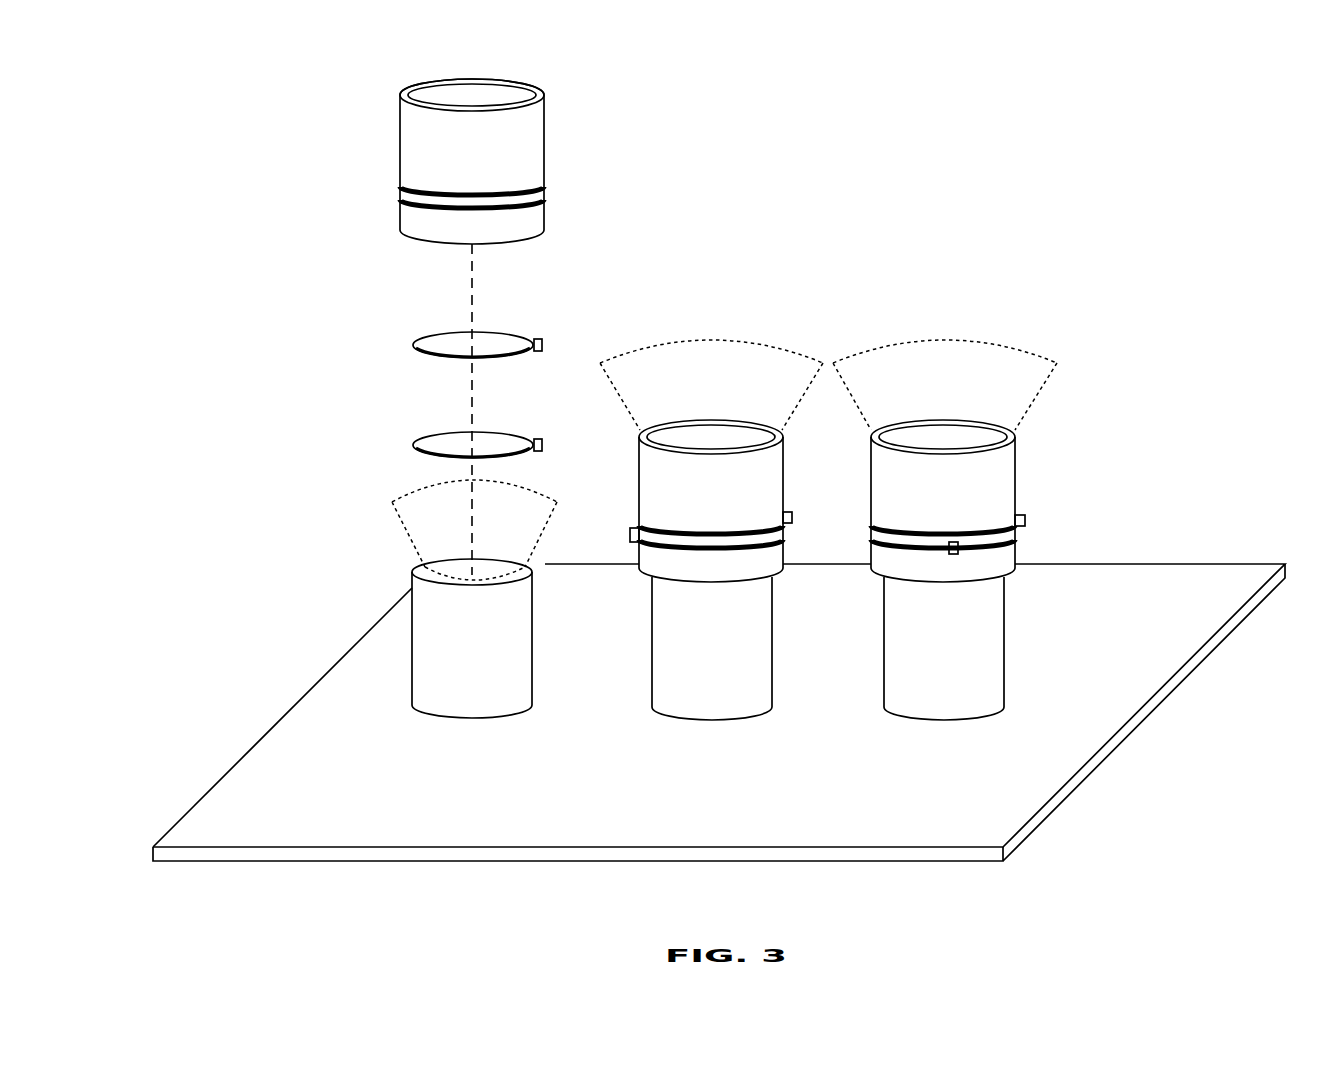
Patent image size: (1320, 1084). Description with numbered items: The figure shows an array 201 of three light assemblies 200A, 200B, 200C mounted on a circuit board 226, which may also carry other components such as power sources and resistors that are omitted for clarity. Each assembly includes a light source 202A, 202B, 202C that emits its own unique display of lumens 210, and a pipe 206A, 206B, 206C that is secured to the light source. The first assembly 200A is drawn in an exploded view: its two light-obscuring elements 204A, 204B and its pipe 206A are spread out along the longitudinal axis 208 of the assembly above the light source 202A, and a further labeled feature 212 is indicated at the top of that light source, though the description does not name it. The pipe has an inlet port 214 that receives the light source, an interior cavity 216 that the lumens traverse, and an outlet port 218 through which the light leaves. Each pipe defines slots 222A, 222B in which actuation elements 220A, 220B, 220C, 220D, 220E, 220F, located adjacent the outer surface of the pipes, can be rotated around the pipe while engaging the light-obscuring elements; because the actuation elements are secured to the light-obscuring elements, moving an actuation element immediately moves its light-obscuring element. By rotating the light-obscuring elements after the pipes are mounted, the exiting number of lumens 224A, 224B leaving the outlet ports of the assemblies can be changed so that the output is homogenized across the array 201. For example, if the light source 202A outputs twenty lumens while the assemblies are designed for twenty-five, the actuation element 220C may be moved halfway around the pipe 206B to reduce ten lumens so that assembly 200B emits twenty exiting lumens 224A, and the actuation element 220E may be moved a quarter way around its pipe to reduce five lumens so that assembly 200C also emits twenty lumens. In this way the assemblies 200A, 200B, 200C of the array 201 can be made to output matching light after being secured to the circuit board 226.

The array 201 is at (1207, 85).
The first assembly 200A is at (423, 667).
The assembly 200B is at (704, 536).
The assembly 200C is at (934, 536).
The light source 202A is at (418, 590).
The light source 202B is at (668, 640).
The light source 202C is at (898, 645).
The light-obscuring element 204A is at (422, 446).
The light-obscuring element 204B is at (420, 346).
The pipe 206A is at (408, 139).
The pipe 206B is at (658, 488).
The pipe 206C is at (890, 488).
The longitudinal axis 208 is at (472, 392).
The lumens 210 is at (400, 520).
The container opening 212 is at (428, 566).
The inlet port 214 is at (424, 259).
The cavity 216 is at (466, 96).
The outlet port 218 is at (518, 66).
The actuation element 220A is at (545, 346).
The actuation element 220B is at (545, 446).
The actuation element 220C is at (630, 536).
The actuation element 220D is at (793, 518).
The actuation element 220E is at (955, 555).
The actuation element 220F is at (1026, 520).
The slot 222A is at (546, 198).
The slot 222B is at (546, 186).
The exiting number of lumens 224A is at (735, 340).
The exiting number of lumens 224B is at (975, 340).
The circuit board 226 is at (162, 853).